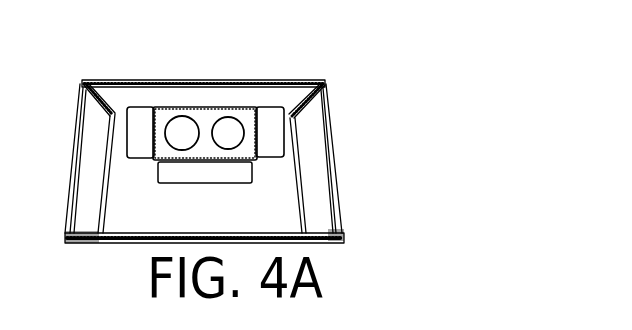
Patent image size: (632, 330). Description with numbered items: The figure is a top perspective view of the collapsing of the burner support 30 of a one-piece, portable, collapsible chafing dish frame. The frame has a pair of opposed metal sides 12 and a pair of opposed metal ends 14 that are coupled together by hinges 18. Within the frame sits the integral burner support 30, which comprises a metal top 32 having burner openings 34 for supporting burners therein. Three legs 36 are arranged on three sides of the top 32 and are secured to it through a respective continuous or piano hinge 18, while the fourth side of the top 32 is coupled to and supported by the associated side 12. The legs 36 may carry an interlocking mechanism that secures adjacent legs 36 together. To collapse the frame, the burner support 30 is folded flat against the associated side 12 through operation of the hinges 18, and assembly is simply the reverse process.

The metal side 12 is at (108, 79).
The metal end 14 is at (87, 192).
The hinge 18 is at (311, 79).
The burner support 30 is at (134, 177).
The metal top 32 is at (193, 116).
The burner opening 34 is at (227, 128).
The leg 36 is at (142, 143).